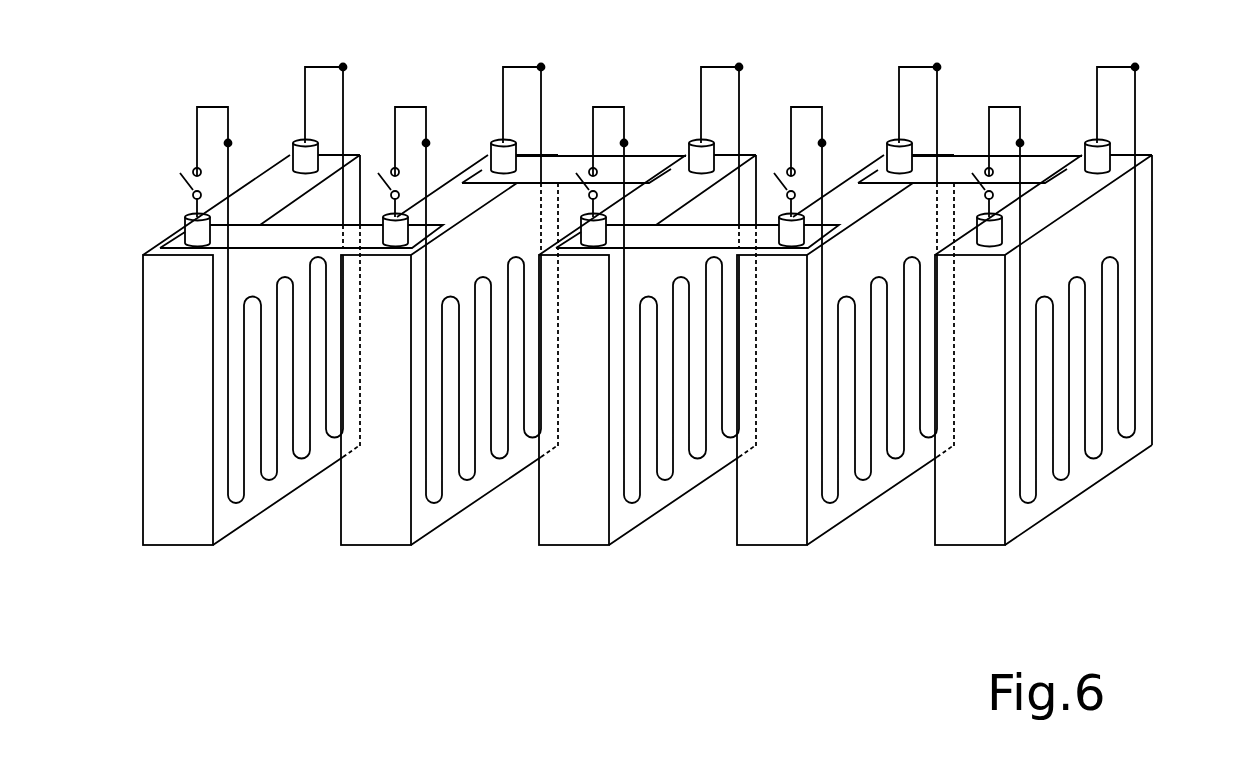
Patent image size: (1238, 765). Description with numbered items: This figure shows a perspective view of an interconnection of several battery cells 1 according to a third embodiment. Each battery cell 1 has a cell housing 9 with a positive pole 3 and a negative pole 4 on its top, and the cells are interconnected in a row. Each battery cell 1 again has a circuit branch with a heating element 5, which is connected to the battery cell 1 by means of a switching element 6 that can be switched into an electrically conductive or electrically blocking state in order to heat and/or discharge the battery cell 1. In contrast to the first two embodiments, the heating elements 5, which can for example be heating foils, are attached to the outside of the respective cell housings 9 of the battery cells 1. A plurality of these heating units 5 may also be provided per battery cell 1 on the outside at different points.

The battery cell 1 is at (649, 343).
The positive pole 3 is at (581, 273).
The negative pole 4 is at (690, 129).
The heating unit 5 is at (668, 319).
The switching element 6 is at (575, 114).
The cell housing 9 is at (165, 388).